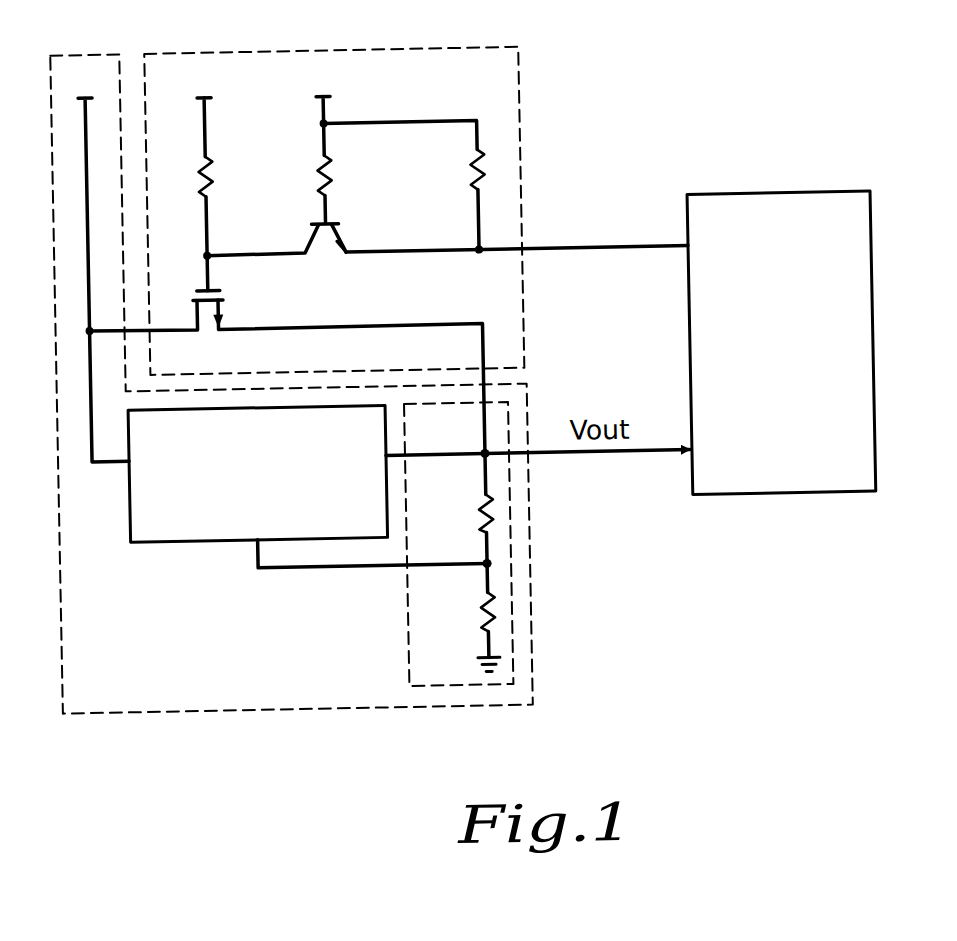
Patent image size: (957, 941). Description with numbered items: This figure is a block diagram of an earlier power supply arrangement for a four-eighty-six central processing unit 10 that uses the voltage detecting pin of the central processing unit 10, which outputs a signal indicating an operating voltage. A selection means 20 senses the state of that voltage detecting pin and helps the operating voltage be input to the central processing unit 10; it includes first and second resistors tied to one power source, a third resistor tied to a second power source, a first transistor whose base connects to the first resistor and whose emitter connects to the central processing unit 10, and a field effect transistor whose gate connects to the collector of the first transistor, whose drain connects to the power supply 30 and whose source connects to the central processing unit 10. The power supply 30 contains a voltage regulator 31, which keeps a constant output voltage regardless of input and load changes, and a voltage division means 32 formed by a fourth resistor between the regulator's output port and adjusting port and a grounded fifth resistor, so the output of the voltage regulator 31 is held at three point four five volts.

The central processing unit 10 is at (780, 201).
The selection means 20 is at (418, 50).
The power supply 30 is at (93, 51).
The voltage regulator 31 is at (180, 538).
The voltage division means 32 is at (402, 634).